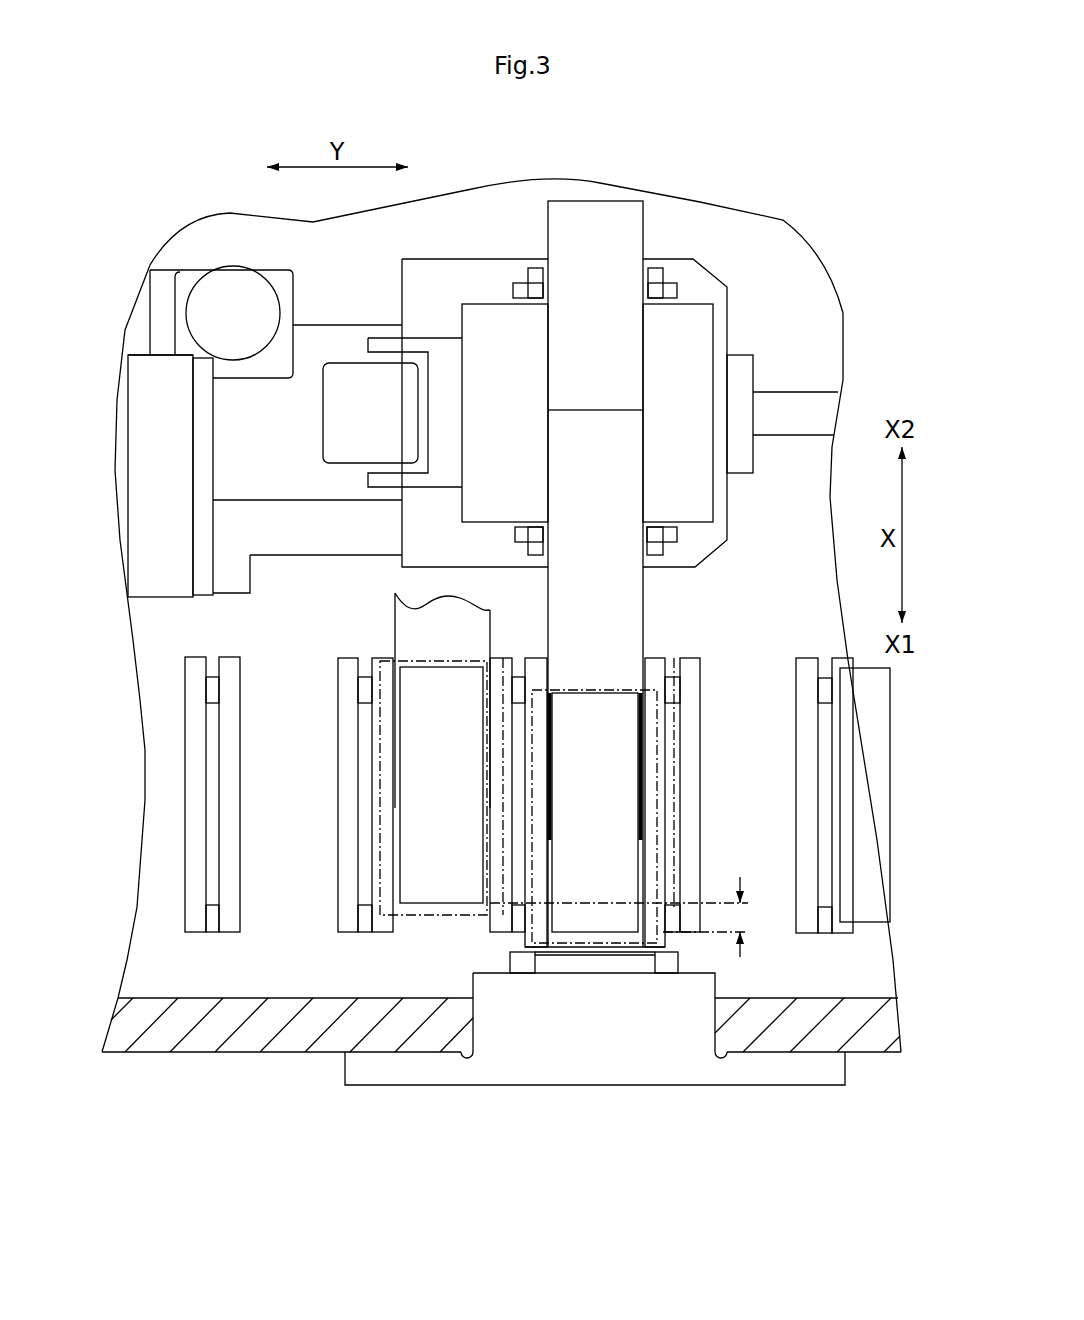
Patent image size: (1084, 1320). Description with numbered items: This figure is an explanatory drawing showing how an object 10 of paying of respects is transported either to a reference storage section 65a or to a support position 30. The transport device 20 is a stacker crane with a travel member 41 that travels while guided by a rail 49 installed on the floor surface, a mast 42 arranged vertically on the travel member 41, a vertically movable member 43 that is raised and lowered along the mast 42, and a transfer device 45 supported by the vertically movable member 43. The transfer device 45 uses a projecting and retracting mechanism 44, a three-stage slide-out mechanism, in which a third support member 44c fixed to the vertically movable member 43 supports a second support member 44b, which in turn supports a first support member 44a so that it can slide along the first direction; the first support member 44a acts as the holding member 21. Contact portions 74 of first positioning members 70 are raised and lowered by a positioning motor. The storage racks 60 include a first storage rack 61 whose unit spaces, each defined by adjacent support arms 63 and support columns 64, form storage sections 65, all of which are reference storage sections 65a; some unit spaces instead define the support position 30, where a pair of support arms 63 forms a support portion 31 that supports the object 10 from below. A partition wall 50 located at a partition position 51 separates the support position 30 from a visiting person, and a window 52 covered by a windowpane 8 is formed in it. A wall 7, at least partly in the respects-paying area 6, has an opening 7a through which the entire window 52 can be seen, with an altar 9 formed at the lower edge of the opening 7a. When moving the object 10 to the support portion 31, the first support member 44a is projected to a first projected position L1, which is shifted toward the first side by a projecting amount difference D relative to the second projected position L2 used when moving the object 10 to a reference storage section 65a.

The respects-paying area 6 is at (546, 1123).
The wall 7 is at (195, 1053).
The opening 7a is at (475, 1028).
The windowpane 8 is at (595, 957).
The altar 9 is at (357, 1072).
The object of paying of respects 10 is at (380, 743).
The transport device 20 is at (747, 328).
The holding member 21 is at (513, 756).
The support position 30 is at (590, 735).
The support portion 31 is at (653, 675).
The travel member 41 is at (320, 340).
The mast 42 is at (333, 413).
The vertically movable member 43 is at (470, 307).
The projecting and retracting mechanism 44 is at (678, 413).
The first support member 44a is at (513, 756).
The second support member 44b is at (632, 597).
The third support member 44c is at (565, 342).
The transfer device 45 is at (647, 467).
The rail 49 is at (795, 425).
The partition wall 50 is at (582, 1059).
The partition position 51 is at (503, 960).
The window 52 is at (655, 967).
The storage rack 60 is at (485, 805).
The first storage rack 61 is at (485, 805).
The support arm 63 is at (465, 745).
The support column 64 is at (213, 688).
The storage section 65 is at (410, 697).
The reference storage section 65a is at (375, 742).
The first positioning member 70 is at (518, 282).
The contact portion 74 is at (611, 428).
The projecting amount difference D is at (743, 917).
The first projected position L1 is at (567, 935).
The second projected position L2 is at (437, 907).